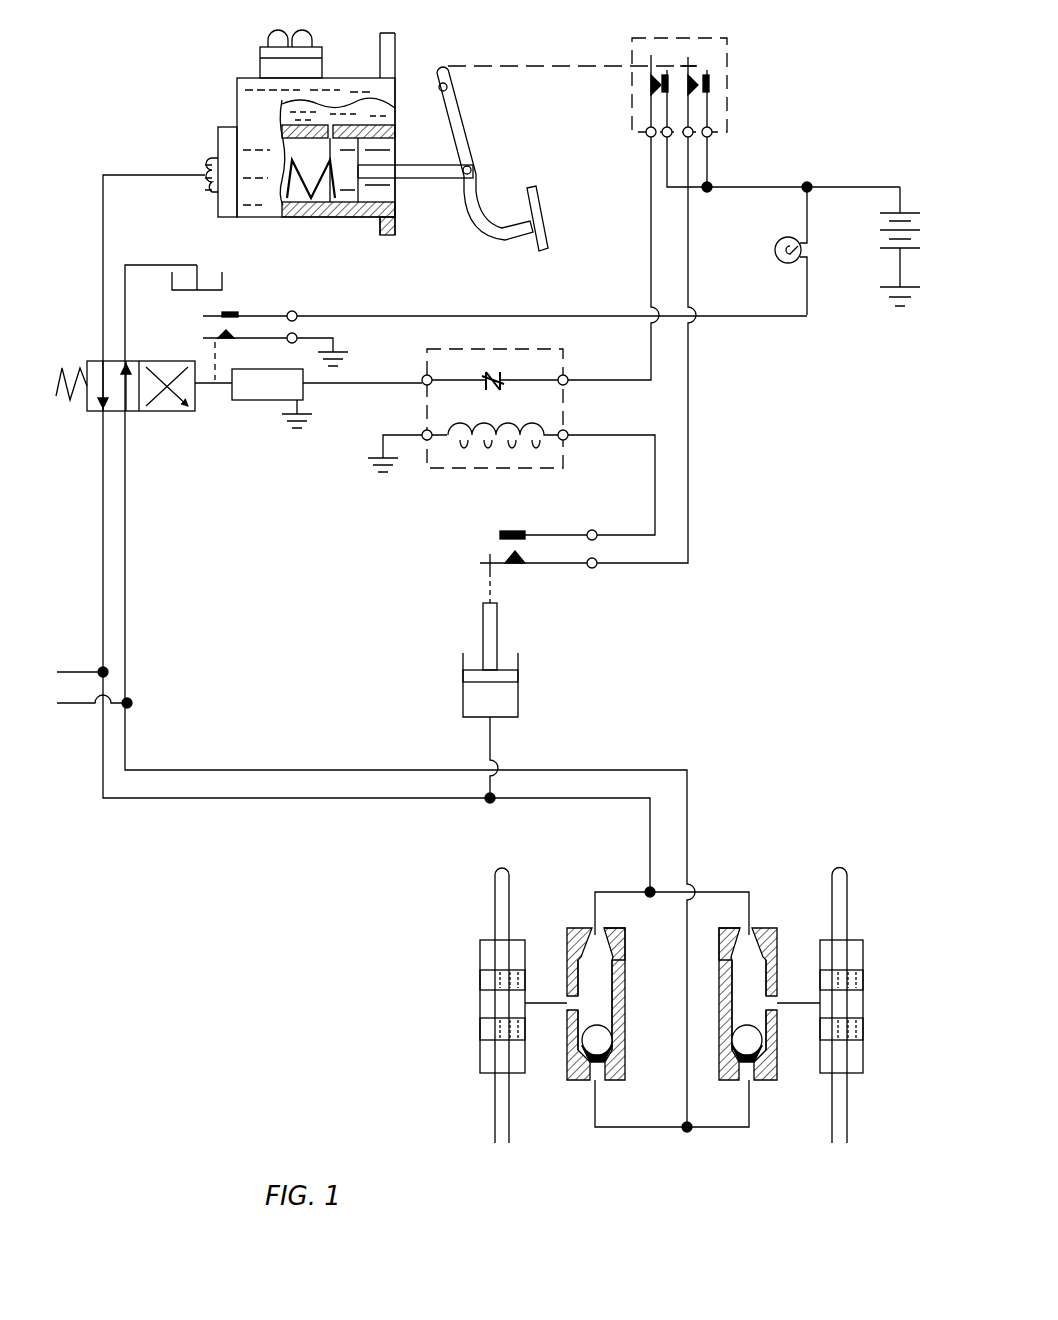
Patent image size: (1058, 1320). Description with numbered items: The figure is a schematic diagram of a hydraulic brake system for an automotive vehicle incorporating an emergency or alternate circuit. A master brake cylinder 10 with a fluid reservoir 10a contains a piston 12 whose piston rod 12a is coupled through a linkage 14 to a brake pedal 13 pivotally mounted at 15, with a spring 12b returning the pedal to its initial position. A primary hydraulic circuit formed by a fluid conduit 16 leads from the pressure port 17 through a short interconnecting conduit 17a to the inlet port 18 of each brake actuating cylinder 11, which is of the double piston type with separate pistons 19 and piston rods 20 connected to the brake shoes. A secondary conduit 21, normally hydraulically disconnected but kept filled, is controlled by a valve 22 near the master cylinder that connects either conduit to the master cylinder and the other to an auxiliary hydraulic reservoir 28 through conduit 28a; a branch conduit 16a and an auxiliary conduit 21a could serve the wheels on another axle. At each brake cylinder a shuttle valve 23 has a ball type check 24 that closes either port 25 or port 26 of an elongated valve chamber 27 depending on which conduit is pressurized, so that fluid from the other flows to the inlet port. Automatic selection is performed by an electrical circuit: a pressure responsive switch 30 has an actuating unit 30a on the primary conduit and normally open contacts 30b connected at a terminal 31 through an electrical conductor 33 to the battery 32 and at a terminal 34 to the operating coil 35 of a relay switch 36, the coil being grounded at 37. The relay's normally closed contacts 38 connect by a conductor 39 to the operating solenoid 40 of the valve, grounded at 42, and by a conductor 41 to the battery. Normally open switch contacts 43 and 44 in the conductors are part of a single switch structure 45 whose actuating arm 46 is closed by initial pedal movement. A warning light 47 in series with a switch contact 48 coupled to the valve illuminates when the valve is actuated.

The master brake cylinder 10 is at (248, 72).
The fluid reservoir 10a is at (350, 110).
The brake actuating cylinders 11 is at (478, 960).
The piston 12 is at (400, 190).
The piston rod 12a is at (428, 178).
The spring 12b is at (295, 212).
The brake pedal 13 is at (500, 233).
The linkage 14 is at (473, 170).
The pivotal mounting 15 is at (449, 88).
The fluid conduit 16 is at (201, 798).
The branch conduit 16a is at (103, 670).
The pressure port 17 is at (205, 165).
The interconnecting conduit 17a is at (103, 240).
The inlet port 18 is at (550, 1003).
The pistons 19 is at (478, 1025).
The piston rods 20 is at (495, 903).
The conduit 21 is at (234, 755).
The auxiliary conduit 21a is at (103, 706).
The valve 22 is at (162, 412).
The shuttle valve 23 is at (615, 940).
The ball type check 24 is at (606, 1034).
The port 25 is at (576, 934).
The port 26 is at (613, 1060).
The valve chamber 27 is at (613, 986).
The auxiliary hydraulic reservoir 28 is at (225, 285).
The conduit 28a is at (197, 265).
The pressure responsive switch 30 is at (483, 581).
The actuating unit 30a is at (520, 681).
The switch contacts 30b is at (505, 561).
The terminal 31 is at (592, 570).
The battery 32 is at (880, 230).
The electrical conductor 33 is at (801, 186).
The terminal 34 is at (596, 529).
The operating coil 35 is at (468, 428).
The relay switch 36 is at (495, 468).
The ground 37 is at (378, 470).
The normally closed contacts 38 is at (500, 372).
The conductor 39 is at (355, 383).
The operating solenoid 40 is at (262, 400).
The conductor 41 is at (651, 212).
The ground 42 is at (311, 421).
The switch contacts 43 is at (714, 96).
The switch contacts 44 is at (641, 85).
The switch structure 45 is at (740, 20).
The actuating arm 46 is at (576, 62).
The warning light 47 is at (781, 240).
The switch contact 48 is at (205, 337).